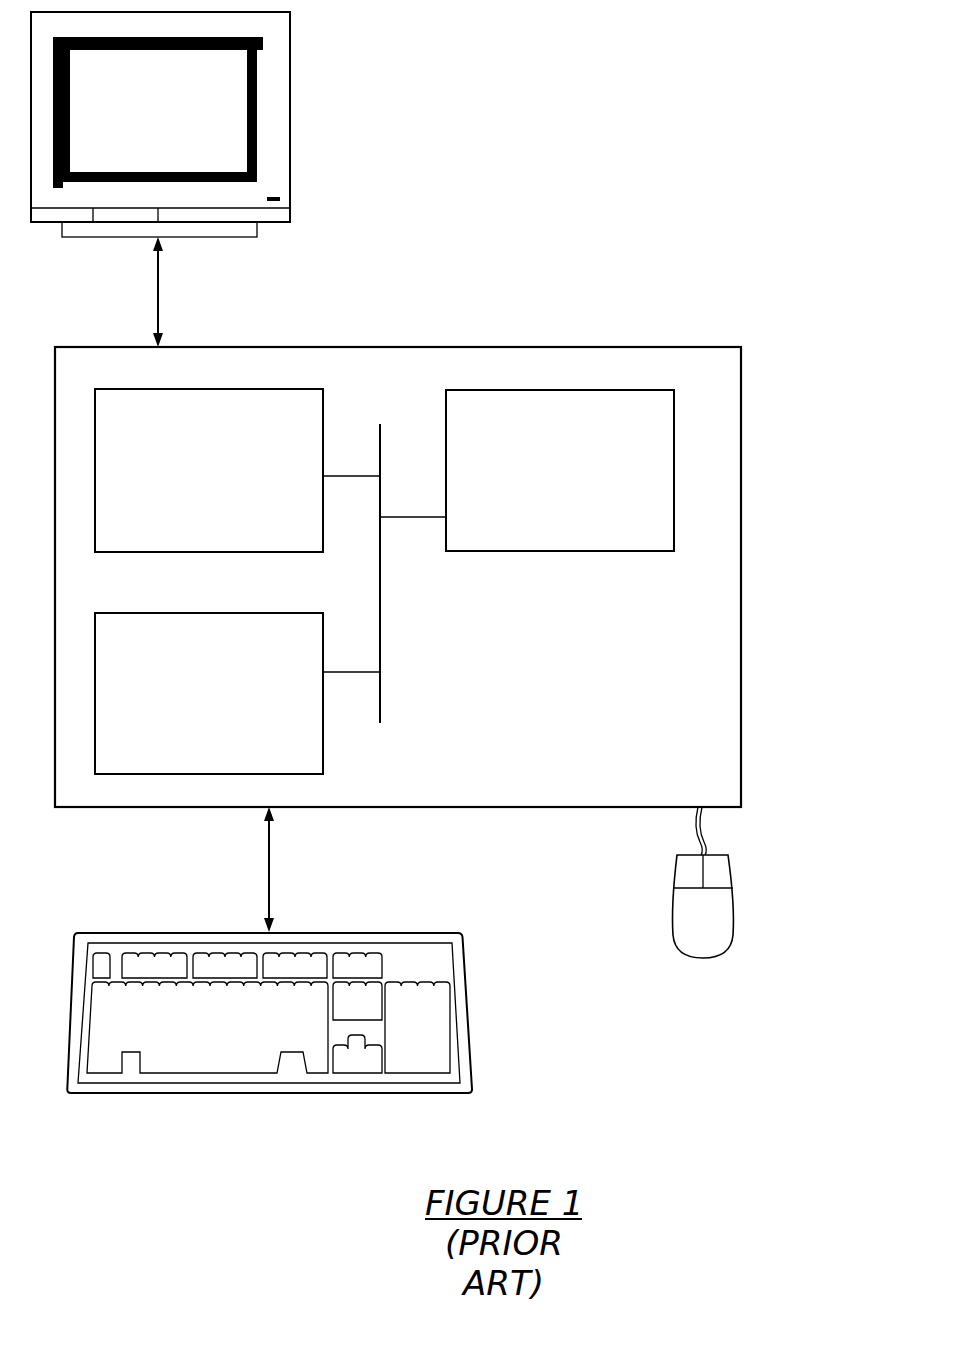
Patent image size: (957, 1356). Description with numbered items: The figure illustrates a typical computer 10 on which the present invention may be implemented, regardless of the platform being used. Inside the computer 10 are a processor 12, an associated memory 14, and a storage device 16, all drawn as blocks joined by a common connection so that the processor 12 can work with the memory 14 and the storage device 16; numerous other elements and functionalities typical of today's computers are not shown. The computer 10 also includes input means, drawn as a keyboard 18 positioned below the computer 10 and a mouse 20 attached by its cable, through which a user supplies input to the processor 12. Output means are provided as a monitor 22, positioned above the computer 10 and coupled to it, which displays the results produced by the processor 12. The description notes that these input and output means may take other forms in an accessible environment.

The computer 10 is at (741, 668).
The processor 12 is at (596, 484).
The memory 14 is at (228, 484).
The storage device 16 is at (225, 707).
The keyboard 18 is at (171, 1036).
The mouse 20 is at (686, 931).
The monitor 22 is at (138, 136).